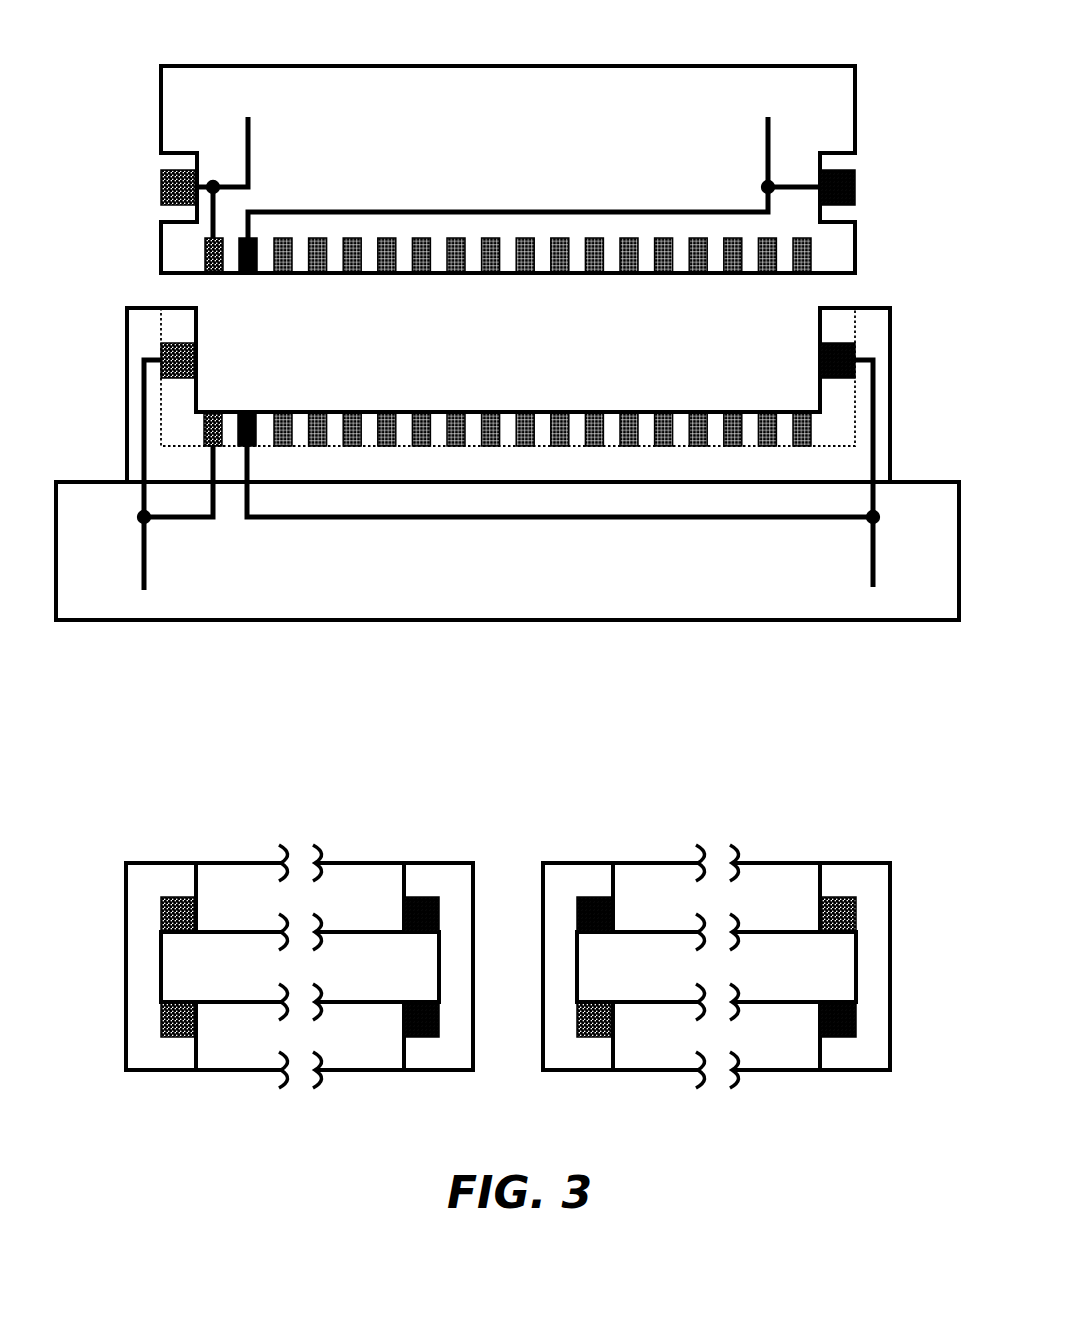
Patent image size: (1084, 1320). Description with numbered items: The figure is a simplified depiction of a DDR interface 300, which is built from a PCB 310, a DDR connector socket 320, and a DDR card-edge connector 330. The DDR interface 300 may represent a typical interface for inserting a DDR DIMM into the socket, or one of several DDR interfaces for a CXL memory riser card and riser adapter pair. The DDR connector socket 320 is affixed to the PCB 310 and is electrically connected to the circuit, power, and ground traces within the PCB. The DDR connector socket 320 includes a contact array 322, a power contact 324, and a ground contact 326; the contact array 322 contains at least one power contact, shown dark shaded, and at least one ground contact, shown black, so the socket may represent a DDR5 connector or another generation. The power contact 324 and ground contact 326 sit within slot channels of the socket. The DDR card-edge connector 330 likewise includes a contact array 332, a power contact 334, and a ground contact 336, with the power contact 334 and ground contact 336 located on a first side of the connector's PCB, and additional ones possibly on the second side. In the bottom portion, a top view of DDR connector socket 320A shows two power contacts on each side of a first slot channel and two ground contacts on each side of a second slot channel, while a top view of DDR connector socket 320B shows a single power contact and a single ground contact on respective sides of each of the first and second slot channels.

The DDR interface 300 is at (147, 678).
The PCB 310 is at (126, 482).
The DDR connector socket 320 is at (136, 307).
The contact array 322 is at (392, 398).
The power contact 324 is at (198, 355).
The ground contact 326 is at (818, 355).
The DDR card-edge connector 330 is at (166, 66).
The contact array 332 is at (550, 288).
The power contact 334 is at (158, 178).
The ground contact 336 is at (857, 181).
The DDR connector socket 320A is at (138, 863).
The DDR connector socket 320B is at (555, 863).